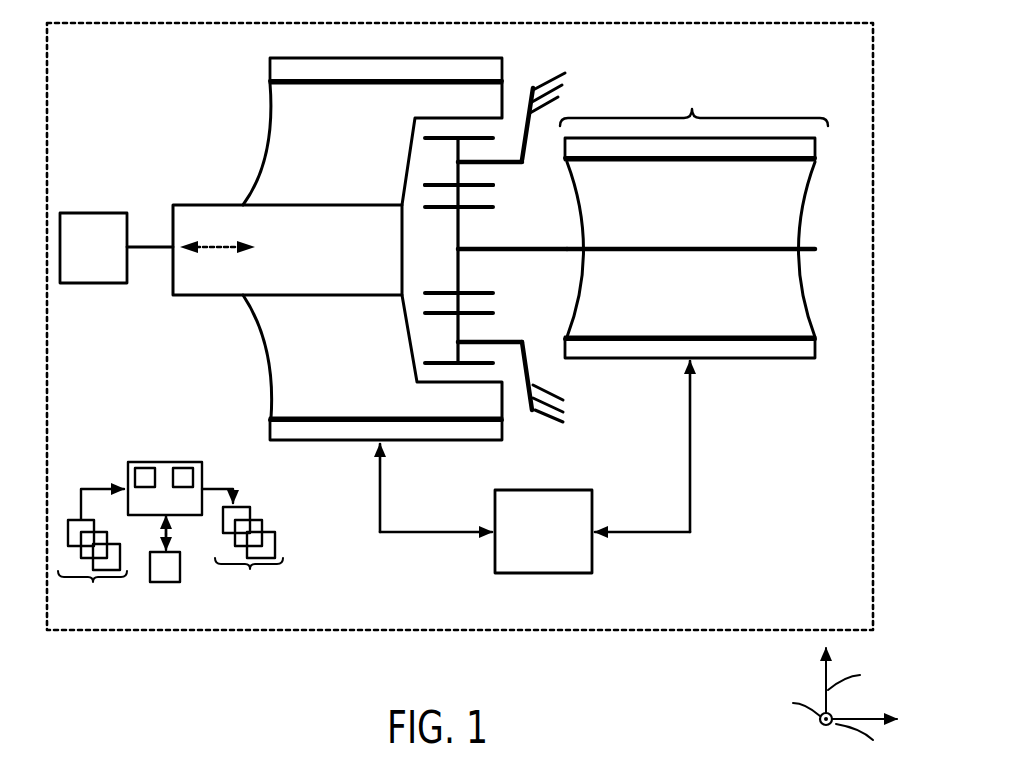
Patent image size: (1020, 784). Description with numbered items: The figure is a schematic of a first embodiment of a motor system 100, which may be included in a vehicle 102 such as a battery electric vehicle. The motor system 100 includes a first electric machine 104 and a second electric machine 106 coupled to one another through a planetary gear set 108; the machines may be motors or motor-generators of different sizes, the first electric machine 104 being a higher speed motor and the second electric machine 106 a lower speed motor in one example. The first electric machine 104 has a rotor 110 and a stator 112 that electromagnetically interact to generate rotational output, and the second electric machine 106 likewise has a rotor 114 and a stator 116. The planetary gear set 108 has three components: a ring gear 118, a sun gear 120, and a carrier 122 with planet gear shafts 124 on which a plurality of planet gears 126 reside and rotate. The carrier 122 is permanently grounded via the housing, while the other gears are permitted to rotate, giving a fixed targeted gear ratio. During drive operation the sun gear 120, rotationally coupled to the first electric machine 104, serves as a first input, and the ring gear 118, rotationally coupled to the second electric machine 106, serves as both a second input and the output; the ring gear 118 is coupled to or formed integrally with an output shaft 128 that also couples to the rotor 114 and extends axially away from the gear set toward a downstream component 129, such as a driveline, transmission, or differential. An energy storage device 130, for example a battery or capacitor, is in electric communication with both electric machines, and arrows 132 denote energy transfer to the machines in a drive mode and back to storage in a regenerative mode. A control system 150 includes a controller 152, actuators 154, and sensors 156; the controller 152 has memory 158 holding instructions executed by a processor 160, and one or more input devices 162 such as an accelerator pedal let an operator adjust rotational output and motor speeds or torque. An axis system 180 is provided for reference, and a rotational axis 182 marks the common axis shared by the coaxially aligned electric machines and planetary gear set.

The motor system 100 is at (845, 66).
The vehicle 102 is at (50, 24).
The first electric machine 104 is at (694, 120).
The second electric machine 106 is at (193, 78).
The planetary gear set 108 is at (589, 77).
The rotor 110 is at (800, 200).
The stator 112 is at (818, 345).
The rotor 114 is at (270, 124).
The stator 116 is at (285, 58).
The ring gear 118 is at (488, 118).
The sun gear 120 is at (462, 229).
The carrier 122 is at (545, 144).
The planet gear shafts 124 is at (488, 165).
The planet gears 126 is at (462, 323).
The output shaft 128 is at (186, 205).
The downstream component 129 is at (66, 213).
The energy storage device 130 is at (500, 574).
The arrows 132 is at (400, 535).
The control system 150 is at (91, 416).
The controller 152 is at (132, 462).
The actuators 154 is at (242, 543).
The sensors 156 is at (92, 549).
The memory 158 is at (132, 477).
The processor 160 is at (196, 477).
The input devices 162 is at (166, 582).
The axis system 180 is at (900, 673).
The rotational axis 182 is at (210, 244).